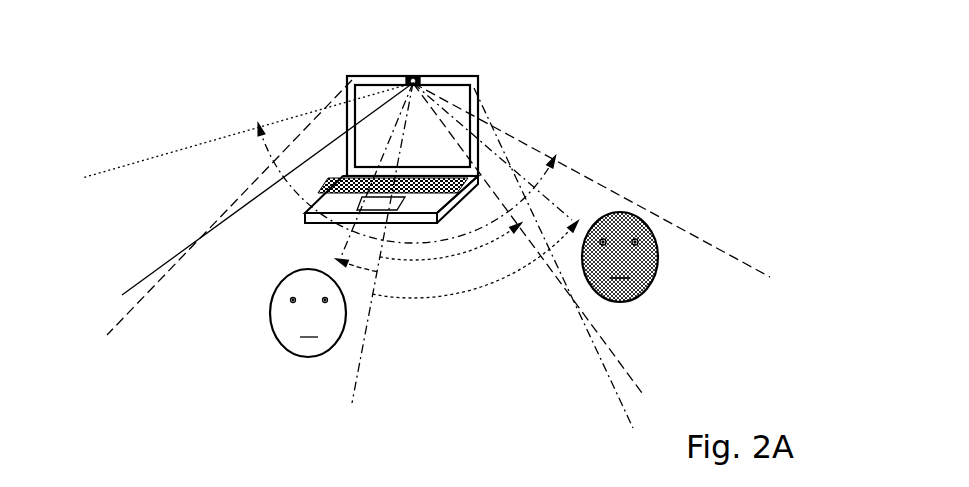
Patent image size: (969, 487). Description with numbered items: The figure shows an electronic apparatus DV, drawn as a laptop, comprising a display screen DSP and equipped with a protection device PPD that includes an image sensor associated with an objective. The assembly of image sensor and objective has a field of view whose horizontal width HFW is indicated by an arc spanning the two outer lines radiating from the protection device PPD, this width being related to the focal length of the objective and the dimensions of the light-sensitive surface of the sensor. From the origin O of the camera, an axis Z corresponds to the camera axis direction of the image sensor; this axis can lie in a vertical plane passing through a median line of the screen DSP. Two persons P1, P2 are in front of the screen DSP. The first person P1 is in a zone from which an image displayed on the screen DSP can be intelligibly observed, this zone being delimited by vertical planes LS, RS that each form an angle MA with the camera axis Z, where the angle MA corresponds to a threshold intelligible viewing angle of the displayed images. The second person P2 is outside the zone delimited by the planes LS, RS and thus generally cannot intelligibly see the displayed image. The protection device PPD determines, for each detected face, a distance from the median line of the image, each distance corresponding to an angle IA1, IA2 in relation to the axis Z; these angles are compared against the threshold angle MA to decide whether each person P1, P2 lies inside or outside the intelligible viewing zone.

The electronic apparatus DV is at (294, 83).
The display screen DSP is at (449, 126).
The protection device PPD is at (408, 78).
The origin of camera axis O is at (414, 79).
The horizontal width of field of view HFW is at (292, 193).
The right vertical plane RS is at (226, 208).
The camera axis direction Z is at (378, 257).
The angle of first face IA1 is at (345, 268).
The angle of second face IA2 is at (452, 297).
The threshold intelligible viewing angle MA is at (465, 259).
The left vertical plane LS is at (580, 315).
The first person P1 is at (270, 308).
The second person P2 is at (660, 268).